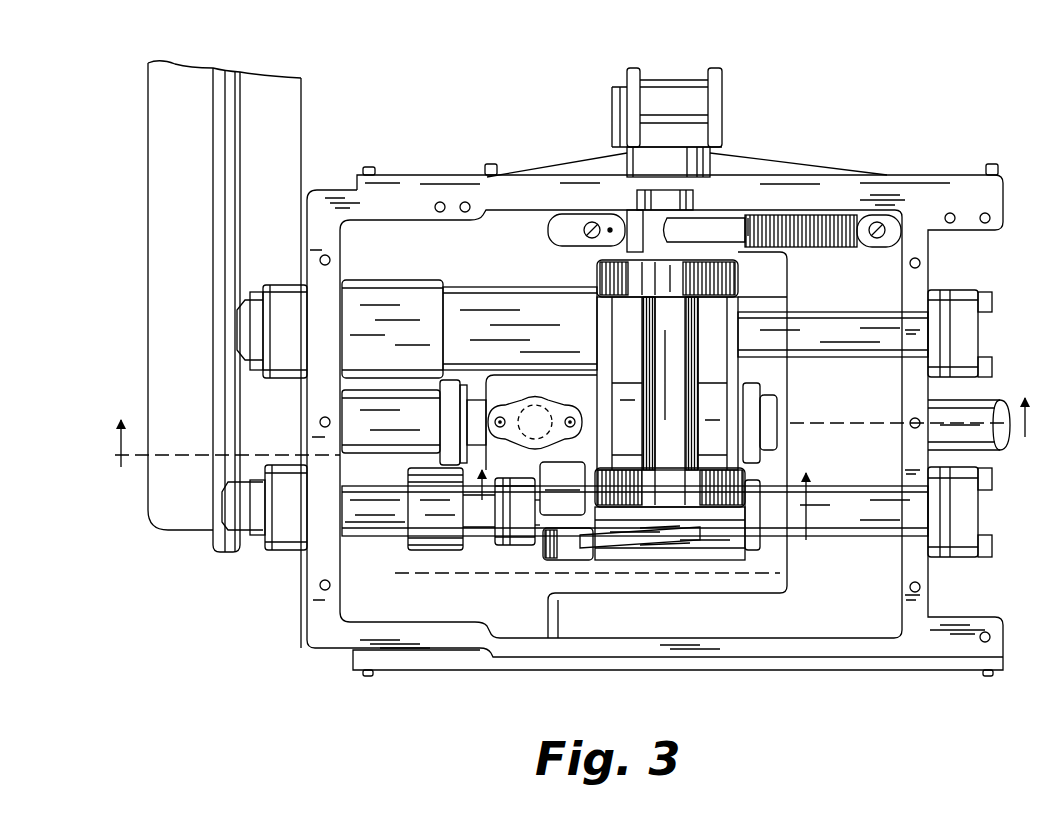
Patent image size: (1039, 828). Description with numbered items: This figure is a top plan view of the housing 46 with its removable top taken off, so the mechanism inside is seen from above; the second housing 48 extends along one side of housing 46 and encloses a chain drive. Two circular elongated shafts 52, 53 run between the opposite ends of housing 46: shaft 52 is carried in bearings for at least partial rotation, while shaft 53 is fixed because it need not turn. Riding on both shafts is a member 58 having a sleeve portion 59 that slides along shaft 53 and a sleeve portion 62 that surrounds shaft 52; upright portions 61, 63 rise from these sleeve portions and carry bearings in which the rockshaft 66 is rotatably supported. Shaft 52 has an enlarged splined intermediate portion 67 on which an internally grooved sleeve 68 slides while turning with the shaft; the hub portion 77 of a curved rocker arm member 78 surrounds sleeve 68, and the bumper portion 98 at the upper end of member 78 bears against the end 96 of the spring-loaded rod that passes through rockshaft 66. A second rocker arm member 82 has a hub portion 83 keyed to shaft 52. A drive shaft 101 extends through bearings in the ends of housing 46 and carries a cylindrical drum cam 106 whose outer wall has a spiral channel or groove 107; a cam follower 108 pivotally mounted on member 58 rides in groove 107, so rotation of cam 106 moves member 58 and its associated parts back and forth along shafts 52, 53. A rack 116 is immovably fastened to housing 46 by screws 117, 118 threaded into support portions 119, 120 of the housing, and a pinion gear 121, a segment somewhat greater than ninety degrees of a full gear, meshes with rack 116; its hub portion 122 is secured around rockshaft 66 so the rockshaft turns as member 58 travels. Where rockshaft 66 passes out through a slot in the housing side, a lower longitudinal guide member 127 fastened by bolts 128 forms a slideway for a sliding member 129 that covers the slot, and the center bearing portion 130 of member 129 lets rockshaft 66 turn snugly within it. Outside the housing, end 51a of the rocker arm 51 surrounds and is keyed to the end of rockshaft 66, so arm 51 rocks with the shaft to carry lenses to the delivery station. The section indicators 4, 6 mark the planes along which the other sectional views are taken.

The section line 4- 4 is at (574, 412).
The section line 6- 6 is at (604, 505).
The housing 46 is at (826, 680).
The second housing 48 is at (196, 350).
The rocker arm 51 is at (724, 104).
The end of rocker arm 51a is at (680, 114).
The shaft 52 is at (860, 525).
The shaft 53 is at (846, 345).
The member 58 is at (559, 422).
The sleeve portion 59 is at (470, 292).
The upright portion 61 is at (738, 268).
The sleeve portion 62 is at (745, 556).
The upright portion 63 is at (686, 518).
The rockshaft 66 is at (680, 386).
The intermediate portion 67 is at (507, 543).
The sleeve 68 is at (499, 511).
The hub portion 77 is at (572, 511).
The curved rocker arm member 78 is at (635, 545).
The rocker arm member 82 is at (408, 545).
The hub portion 83 is at (444, 535).
The end of rod 96 is at (668, 497).
The bumper portion 98 is at (688, 545).
The drive shaft 101 is at (988, 450).
The cylindrical drum cam 106 is at (521, 511).
The channel or groove 107 is at (562, 488).
The cam follower 108 is at (526, 408).
The rack 116 is at (813, 220).
The screw 117 is at (592, 238).
The screw 118 is at (877, 240).
The support portion 119 is at (567, 243).
The support portion 120 is at (894, 248).
The pinion gear 121 is at (749, 213).
The hub portion 122 is at (676, 234).
The lower longitudinal guide member 127 is at (922, 175).
The bolt 128 is at (490, 163).
The sliding member 129 is at (566, 164).
The center bearing portion 130 is at (672, 174).